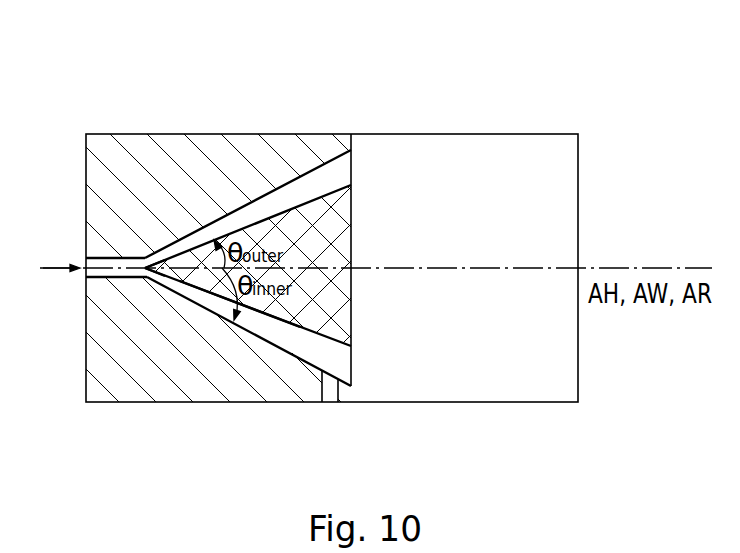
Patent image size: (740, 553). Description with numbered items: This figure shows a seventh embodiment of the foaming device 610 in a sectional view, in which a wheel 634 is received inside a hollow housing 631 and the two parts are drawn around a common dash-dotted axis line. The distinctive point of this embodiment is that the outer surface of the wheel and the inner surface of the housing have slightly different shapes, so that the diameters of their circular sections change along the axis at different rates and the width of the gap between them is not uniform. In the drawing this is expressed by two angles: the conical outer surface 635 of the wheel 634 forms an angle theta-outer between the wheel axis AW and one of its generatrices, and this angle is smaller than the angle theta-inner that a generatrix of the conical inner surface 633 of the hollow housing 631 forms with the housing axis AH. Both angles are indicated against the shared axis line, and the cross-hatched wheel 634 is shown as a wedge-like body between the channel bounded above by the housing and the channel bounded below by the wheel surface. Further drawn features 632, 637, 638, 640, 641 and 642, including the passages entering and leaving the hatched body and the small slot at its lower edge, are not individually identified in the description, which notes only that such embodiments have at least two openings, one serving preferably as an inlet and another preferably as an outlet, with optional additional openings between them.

The nozzle assembly 610 is at (72, 112).
The hollow housing 631 is at (166, 180).
The outer channel 632 is at (257, 203).
The conical inner surface 633 is at (245, 304).
The wheel 634 is at (345, 236).
The conical outer surface 635 is at (209, 302).
The inlet channel 637 is at (86, 258).
The slot 638 is at (328, 392).
The splitter apex 640 is at (143, 279).
The inner channel outlet 641 is at (312, 302).
The outer channel outlet 642 is at (355, 146).